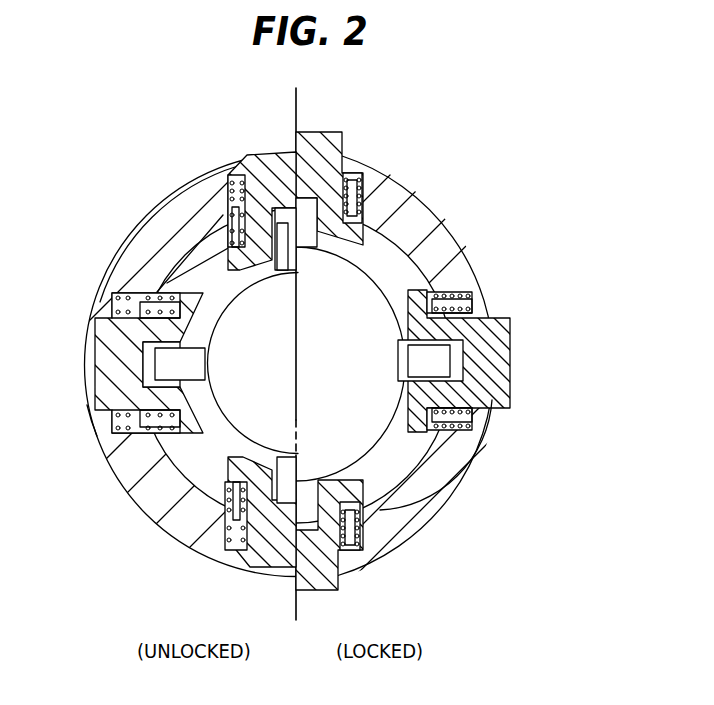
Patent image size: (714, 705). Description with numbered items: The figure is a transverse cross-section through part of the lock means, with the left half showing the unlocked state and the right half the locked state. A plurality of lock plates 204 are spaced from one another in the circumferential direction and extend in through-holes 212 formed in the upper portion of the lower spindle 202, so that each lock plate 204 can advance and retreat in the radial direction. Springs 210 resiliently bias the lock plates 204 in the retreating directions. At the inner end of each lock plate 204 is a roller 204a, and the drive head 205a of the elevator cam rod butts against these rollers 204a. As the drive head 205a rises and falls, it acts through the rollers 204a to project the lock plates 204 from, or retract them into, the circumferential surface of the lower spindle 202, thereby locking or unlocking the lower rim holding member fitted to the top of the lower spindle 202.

The lower spindle 202 is at (430, 222).
The lock plate 204 is at (330, 160).
The roller 204a is at (440, 357).
The drive head 205a is at (383, 440).
The spring 210 is at (468, 291).
The through-hole 212 is at (95, 415).